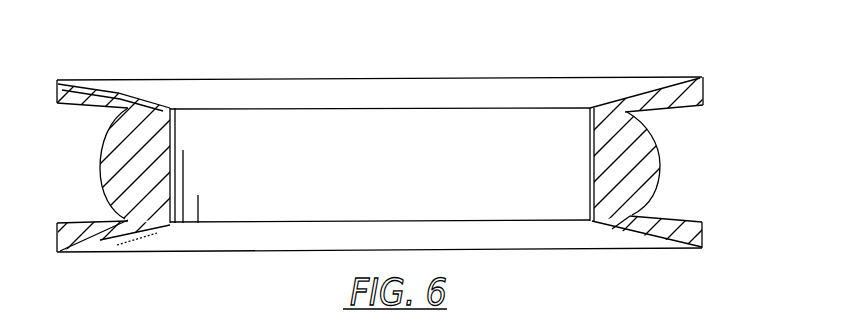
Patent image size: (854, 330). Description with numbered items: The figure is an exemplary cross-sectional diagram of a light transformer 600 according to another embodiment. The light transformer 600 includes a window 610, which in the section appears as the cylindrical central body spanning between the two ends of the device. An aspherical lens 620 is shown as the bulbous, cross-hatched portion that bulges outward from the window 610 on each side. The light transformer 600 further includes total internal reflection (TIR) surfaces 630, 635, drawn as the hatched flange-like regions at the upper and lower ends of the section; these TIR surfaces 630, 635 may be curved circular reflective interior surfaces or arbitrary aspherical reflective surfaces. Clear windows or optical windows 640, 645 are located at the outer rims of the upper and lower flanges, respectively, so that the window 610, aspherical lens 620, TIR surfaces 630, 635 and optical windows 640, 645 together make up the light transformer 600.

The light transformer 600 is at (591, 22).
The window 610 is at (590, 155).
The aspherical lens 620 is at (660, 160).
The total internal reflection surface 630 is at (647, 92).
The total internal reflection surface 635 is at (648, 240).
The optical window 640 is at (703, 83).
The optical window 645 is at (703, 224).